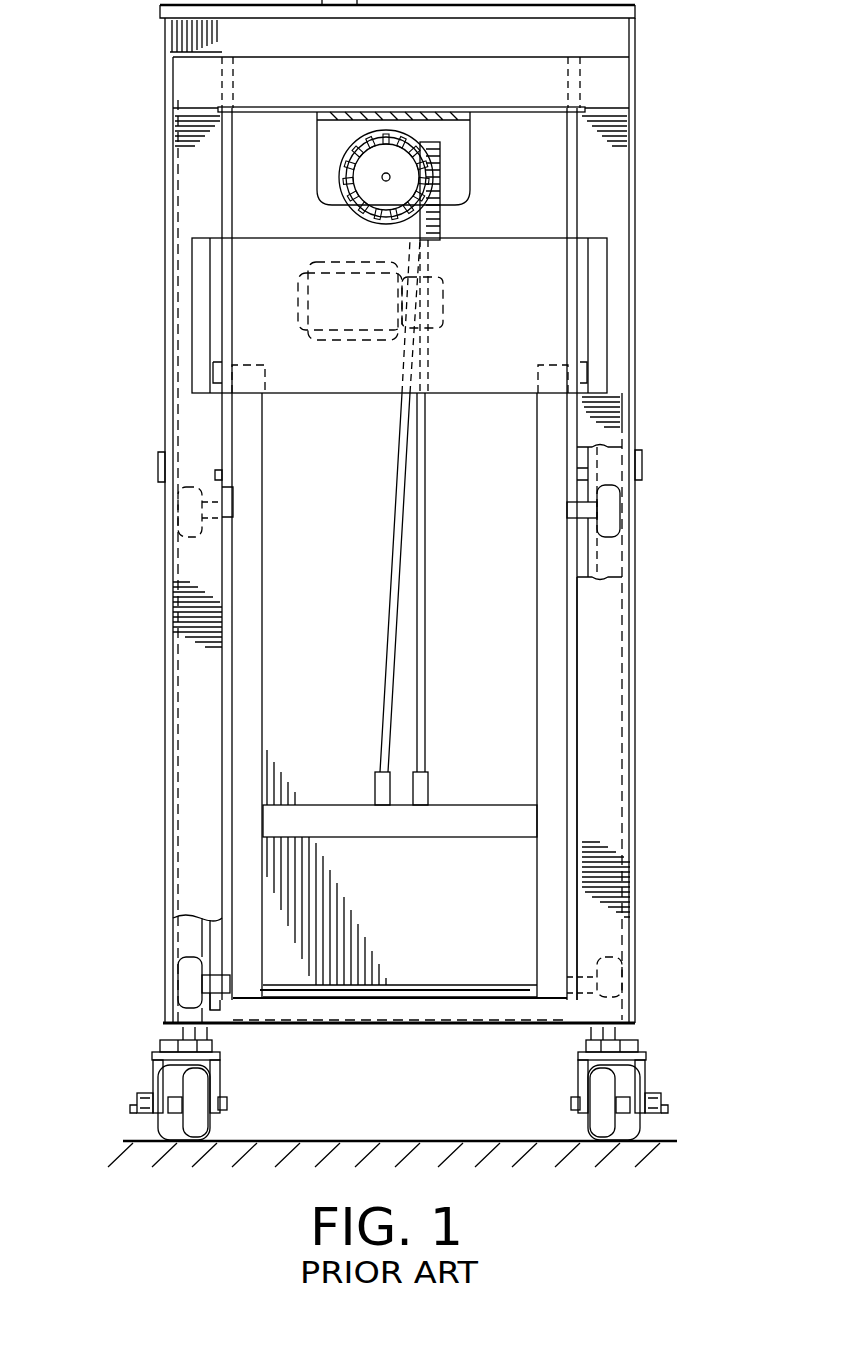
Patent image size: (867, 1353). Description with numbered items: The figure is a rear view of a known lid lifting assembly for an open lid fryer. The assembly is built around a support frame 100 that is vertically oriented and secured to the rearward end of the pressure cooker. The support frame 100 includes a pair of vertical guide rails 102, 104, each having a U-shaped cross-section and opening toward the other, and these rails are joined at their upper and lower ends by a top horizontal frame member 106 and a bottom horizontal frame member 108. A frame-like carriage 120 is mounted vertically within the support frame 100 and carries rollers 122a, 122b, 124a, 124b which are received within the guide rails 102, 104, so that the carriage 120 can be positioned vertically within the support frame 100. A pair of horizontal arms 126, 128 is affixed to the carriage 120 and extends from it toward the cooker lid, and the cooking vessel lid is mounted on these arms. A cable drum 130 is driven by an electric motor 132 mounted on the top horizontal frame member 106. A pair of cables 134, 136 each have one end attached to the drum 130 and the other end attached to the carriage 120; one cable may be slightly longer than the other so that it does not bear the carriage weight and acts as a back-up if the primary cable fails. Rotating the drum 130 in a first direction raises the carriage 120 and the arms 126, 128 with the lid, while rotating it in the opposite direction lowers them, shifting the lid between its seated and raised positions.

The support frame 100 is at (587, 675).
The vertical guide rail 102 is at (600, 723).
The vertical guide rail 104 is at (195, 682).
The top horizontal frame member 106 is at (457, 825).
The bottom horizontal frame member 108 is at (490, 983).
The carriage 120 is at (547, 660).
The roller 122a is at (622, 983).
The roller 122b is at (607, 518).
The roller 124a is at (183, 985).
The roller 124b is at (178, 513).
The horizontal arm 126 is at (580, 425).
The horizontal arm 128 is at (215, 422).
The cable drum 130 is at (372, 222).
The electric motor 132 is at (318, 307).
The cable 134 is at (427, 573).
The cable 136 is at (387, 605).